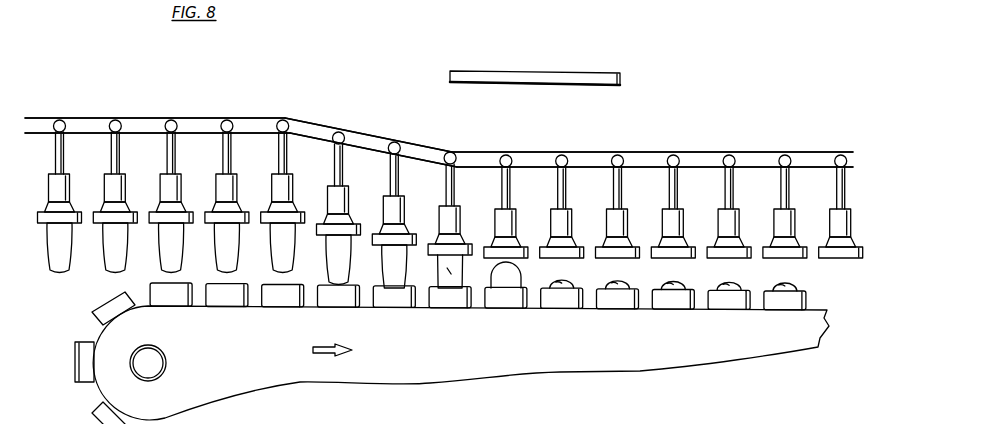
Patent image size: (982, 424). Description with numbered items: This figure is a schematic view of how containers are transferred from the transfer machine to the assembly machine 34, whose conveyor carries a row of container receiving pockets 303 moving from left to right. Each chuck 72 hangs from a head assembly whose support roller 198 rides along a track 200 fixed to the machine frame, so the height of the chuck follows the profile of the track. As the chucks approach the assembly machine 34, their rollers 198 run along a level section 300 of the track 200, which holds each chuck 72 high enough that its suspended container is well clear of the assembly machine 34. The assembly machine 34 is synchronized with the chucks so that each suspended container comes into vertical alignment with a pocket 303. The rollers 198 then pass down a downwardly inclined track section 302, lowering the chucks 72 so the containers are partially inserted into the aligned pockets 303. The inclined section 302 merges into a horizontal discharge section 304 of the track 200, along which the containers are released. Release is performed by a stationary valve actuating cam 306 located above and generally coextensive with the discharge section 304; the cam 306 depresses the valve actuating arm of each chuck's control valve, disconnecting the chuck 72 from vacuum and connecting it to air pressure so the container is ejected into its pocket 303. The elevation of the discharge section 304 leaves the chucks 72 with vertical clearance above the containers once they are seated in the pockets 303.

The assembly machine 34 is at (188, 323).
The chuck 72 is at (168, 185).
The support roller 198 is at (227, 120).
The track 200 is at (368, 129).
The level section 300 is at (88, 123).
The downwardly inclined track section 302 is at (317, 130).
The container receiving pocket 303 is at (226, 300).
The horizontal discharge section 304 is at (580, 158).
The valve actuating cam 306 is at (610, 77).